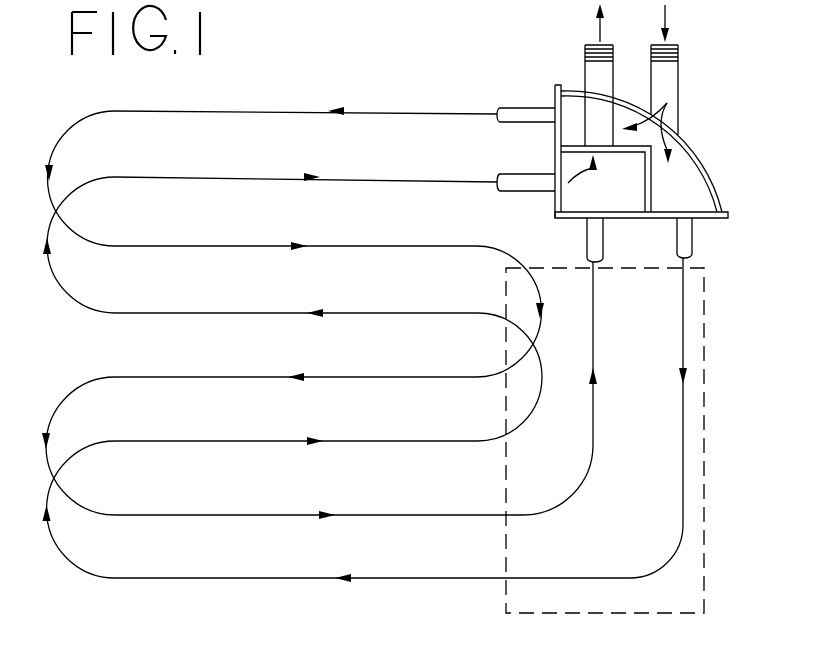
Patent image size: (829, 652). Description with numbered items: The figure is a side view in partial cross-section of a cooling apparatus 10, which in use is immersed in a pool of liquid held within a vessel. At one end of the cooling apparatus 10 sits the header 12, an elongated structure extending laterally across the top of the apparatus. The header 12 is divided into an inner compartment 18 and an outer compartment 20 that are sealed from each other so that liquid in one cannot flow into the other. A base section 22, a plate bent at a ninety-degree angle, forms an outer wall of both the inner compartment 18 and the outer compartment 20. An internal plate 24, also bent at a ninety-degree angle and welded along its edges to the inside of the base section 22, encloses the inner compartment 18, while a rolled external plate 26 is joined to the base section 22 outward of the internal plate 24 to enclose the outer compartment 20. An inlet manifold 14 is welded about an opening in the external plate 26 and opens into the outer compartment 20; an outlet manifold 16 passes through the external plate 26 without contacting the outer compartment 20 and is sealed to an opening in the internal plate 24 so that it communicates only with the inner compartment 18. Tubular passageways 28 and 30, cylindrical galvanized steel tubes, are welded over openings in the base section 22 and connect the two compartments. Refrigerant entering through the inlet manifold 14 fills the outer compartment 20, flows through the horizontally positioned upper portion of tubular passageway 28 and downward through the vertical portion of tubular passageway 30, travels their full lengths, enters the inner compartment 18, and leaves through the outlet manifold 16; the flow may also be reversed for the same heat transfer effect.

The cooling apparatus 10 is at (382, 78).
The header 12 is at (701, 140).
The inlet manifold 14 is at (678, 80).
The outlet manifold 16 is at (613, 70).
The inner compartment 18 is at (635, 188).
The outer compartment 20 is at (686, 194).
The base section 22 is at (557, 208).
The internal plate 24 is at (572, 130).
The external plate 26 is at (714, 200).
The tubular passageway 28 is at (513, 108).
The tubular passageway 30 is at (524, 172).